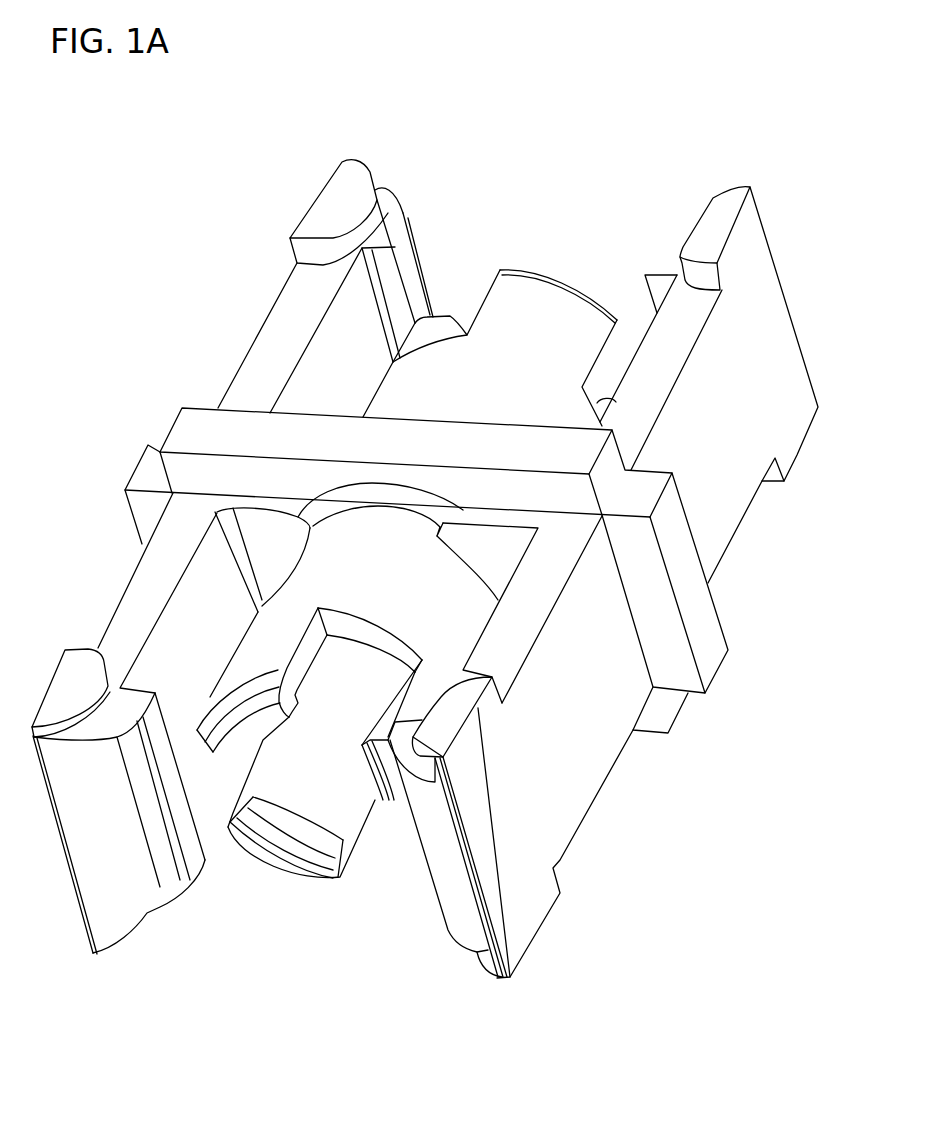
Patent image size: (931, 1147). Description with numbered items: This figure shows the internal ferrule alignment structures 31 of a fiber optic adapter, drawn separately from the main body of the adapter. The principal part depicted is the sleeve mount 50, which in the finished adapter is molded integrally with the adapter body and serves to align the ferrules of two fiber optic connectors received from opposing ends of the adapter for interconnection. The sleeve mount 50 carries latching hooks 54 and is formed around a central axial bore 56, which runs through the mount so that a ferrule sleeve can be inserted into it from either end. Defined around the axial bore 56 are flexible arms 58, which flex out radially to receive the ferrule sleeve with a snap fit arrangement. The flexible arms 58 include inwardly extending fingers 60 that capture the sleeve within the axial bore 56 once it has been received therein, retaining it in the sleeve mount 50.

The internal ferrule alignment structures 31 is at (176, 350).
The sleeve mount 50 is at (600, 242).
The latching hooks 54 is at (393, 218).
The axial bore 56 is at (354, 720).
The flexible arms 58 is at (487, 293).
The inwardly extending fingers 60 is at (313, 827).